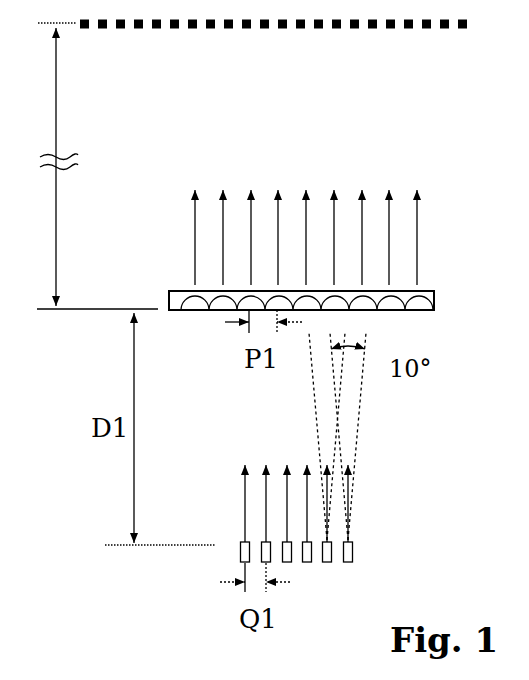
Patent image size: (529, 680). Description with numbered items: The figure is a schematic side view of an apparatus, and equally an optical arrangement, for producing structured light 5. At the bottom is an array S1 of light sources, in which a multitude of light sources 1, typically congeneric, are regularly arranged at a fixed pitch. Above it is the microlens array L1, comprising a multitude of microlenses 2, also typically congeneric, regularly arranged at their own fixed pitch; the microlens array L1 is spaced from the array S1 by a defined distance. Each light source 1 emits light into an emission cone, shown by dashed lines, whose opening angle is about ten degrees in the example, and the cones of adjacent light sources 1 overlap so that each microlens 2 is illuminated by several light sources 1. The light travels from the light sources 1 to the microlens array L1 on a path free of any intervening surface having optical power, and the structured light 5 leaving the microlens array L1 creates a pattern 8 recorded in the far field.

The light source 1 is at (327, 562).
The microlens 2 is at (395, 311).
The structured light 5 is at (182, 175).
The pattern 8 is at (336, 30).
The microlens array L1 is at (266, 295).
The array of light sources S1 is at (342, 532).